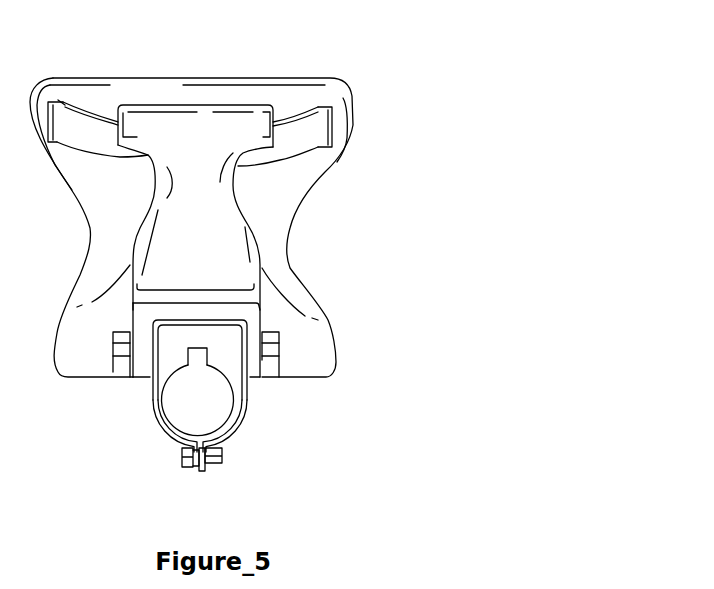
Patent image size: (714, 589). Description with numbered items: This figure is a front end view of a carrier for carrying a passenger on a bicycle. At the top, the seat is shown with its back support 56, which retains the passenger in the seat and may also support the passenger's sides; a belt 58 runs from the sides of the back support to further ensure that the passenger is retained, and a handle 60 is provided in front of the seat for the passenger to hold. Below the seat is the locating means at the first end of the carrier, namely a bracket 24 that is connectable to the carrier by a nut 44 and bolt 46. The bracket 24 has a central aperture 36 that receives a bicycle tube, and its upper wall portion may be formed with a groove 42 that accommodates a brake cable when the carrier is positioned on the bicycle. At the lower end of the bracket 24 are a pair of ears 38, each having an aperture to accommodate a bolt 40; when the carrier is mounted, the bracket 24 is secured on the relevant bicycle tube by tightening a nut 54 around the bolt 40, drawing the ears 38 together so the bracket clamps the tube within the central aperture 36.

The bracket 24 is at (243, 392).
The central aperture 36 is at (218, 405).
The ears 38 is at (168, 448).
The bolt 40 is at (183, 470).
The groove 42 is at (200, 363).
The nut 44 is at (273, 350).
The bolt 46 is at (123, 353).
The nut 54 is at (222, 457).
The back support 56 is at (180, 96).
The belt 58 is at (310, 143).
The handle 60 is at (225, 128).